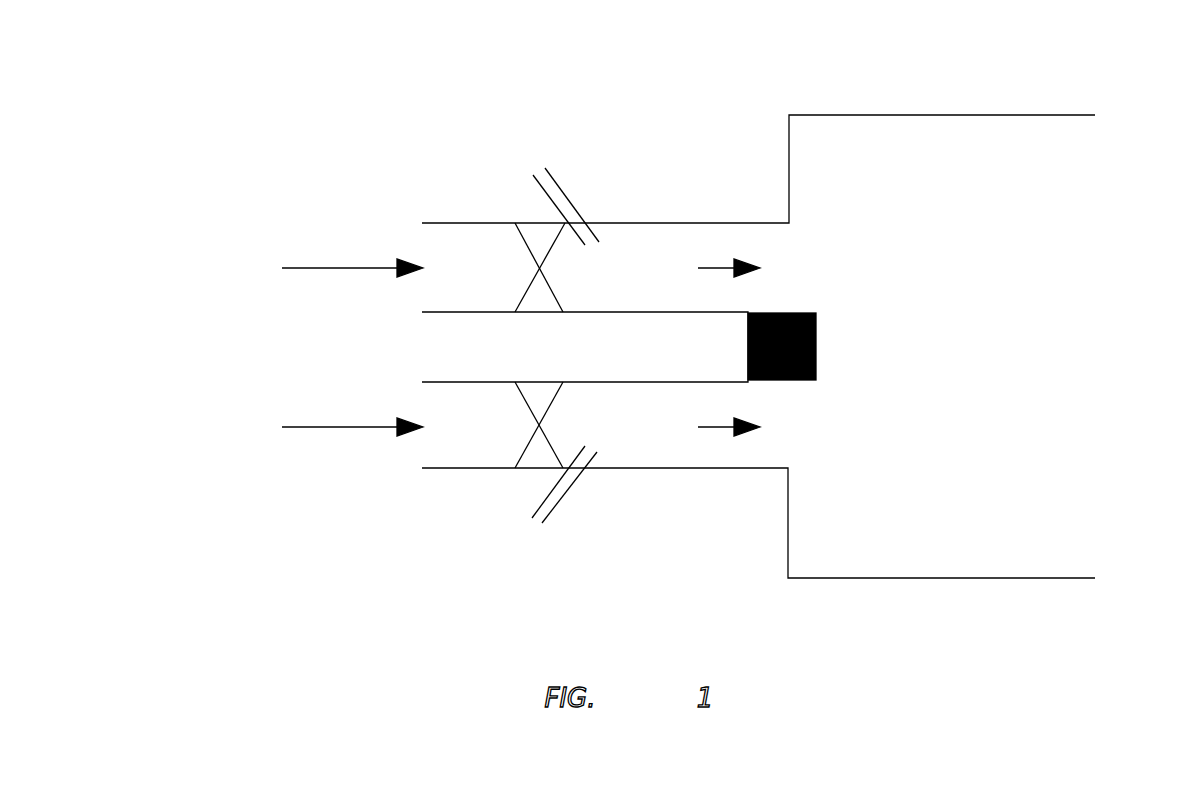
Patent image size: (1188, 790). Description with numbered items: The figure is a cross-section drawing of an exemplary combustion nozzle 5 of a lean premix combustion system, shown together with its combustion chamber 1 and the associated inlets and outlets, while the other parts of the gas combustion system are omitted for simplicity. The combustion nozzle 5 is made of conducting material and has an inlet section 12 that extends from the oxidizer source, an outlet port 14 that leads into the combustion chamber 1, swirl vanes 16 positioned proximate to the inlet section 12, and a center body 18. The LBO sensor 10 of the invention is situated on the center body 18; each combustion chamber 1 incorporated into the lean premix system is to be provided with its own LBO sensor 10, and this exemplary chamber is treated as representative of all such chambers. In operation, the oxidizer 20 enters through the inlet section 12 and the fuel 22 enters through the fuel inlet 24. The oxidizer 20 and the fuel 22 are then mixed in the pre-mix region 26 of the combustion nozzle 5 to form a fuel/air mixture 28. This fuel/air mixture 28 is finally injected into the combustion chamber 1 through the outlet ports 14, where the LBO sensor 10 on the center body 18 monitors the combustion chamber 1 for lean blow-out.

The combustion chamber 1 is at (1041, 322).
The combustion nozzle 5 is at (655, 155).
The LBO sensor 10 is at (845, 347).
The inlet section 12 is at (715, 347).
The outlet port 14 is at (806, 267).
The swirl vanes 16 is at (490, 346).
The center body 18 is at (585, 451).
The oxidizer 20 is at (324, 347).
The fuel 22 is at (538, 167).
The fuel inlet 24 is at (573, 351).
The pre-mix region 26 is at (623, 272).
The fuel/air mixture 28 is at (729, 330).